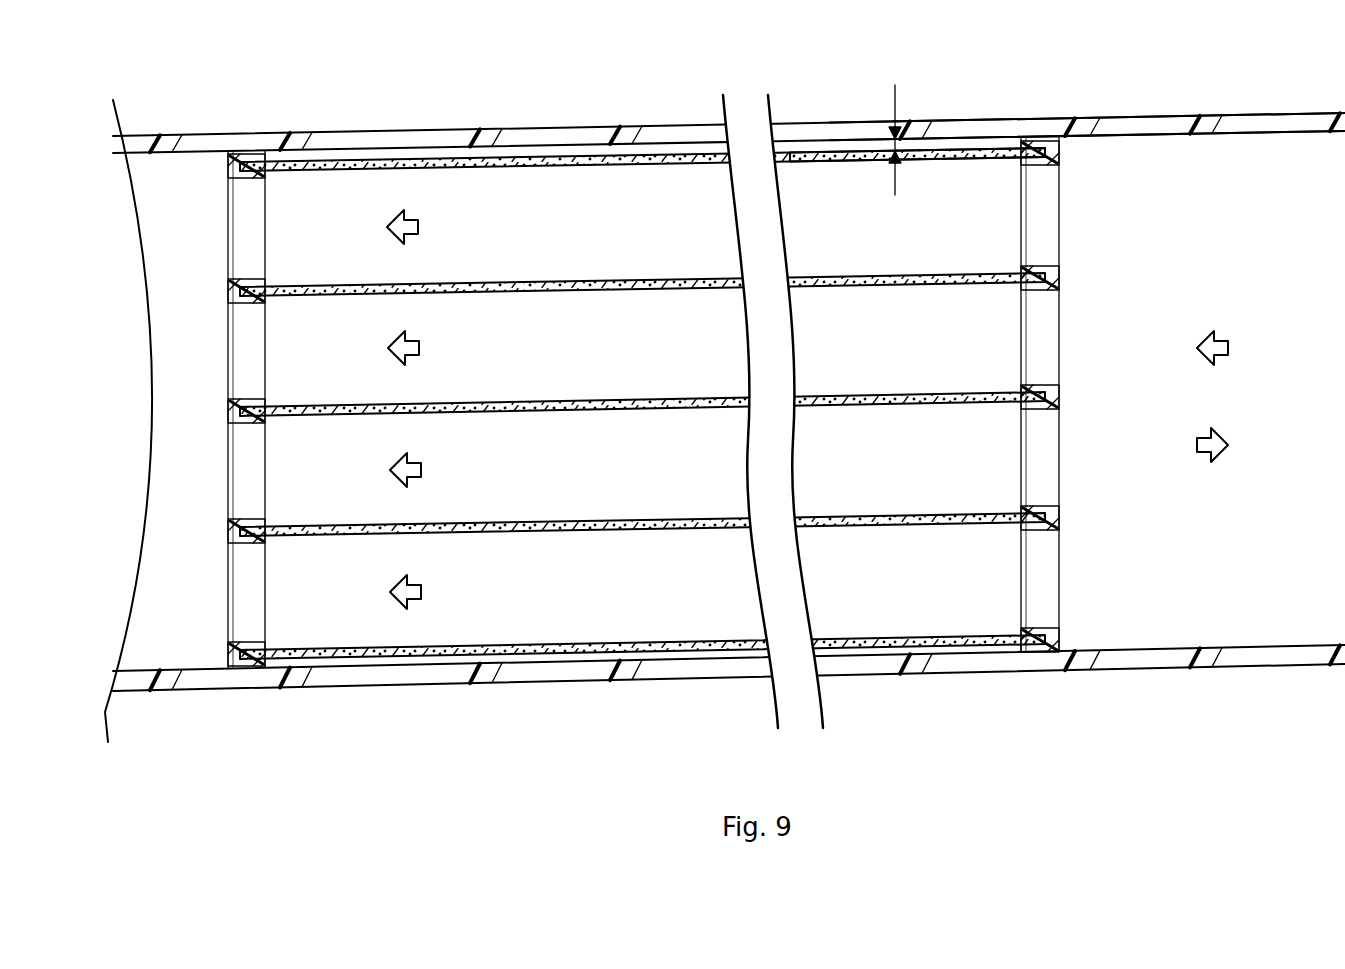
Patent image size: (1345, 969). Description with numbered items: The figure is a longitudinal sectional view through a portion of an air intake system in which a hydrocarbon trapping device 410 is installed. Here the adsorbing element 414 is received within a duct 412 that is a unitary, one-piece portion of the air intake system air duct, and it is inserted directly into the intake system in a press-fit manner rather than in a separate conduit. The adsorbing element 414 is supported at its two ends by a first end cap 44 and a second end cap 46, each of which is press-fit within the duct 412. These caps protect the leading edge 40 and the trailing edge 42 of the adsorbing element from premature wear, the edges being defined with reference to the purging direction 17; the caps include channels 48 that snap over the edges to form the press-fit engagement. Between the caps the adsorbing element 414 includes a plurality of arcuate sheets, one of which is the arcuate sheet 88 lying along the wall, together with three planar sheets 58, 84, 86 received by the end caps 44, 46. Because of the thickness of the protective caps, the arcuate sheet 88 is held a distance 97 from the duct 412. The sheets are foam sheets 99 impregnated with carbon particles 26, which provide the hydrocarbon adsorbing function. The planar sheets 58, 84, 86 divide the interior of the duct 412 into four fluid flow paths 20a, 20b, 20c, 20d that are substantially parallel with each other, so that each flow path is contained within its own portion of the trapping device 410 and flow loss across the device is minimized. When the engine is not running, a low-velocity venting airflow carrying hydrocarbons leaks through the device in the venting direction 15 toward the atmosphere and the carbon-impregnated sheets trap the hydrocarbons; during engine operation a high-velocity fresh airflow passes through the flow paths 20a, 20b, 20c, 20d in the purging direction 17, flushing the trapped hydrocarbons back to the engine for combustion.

The venting direction 15 is at (1222, 356).
The purging direction 17 is at (1220, 452).
The fluid flow path 20a is at (418, 232).
The fluid flow path 20b is at (419, 353).
The fluid flow path 20c is at (421, 475).
The fluid flow path 20d is at (421, 597).
The carbon particles 26 is at (472, 200).
The leading edge 40 is at (1045, 152).
The trailing edge 42 is at (225, 172).
The first end cap 44 is at (1052, 183).
The second end cap 46 is at (246, 182).
The channel 48 is at (1022, 178).
The planar sheet 58 is at (920, 408).
The planar sheet 84 is at (925, 530).
The planar sheet 86 is at (918, 286).
The arcuate sheet 88 is at (815, 152).
The distance 97 is at (893, 100).
The foam sheet 99 is at (642, 189).
The trapping device 410 is at (186, 389).
The duct 412 is at (972, 120).
The adsorbing element 414 is at (355, 668).